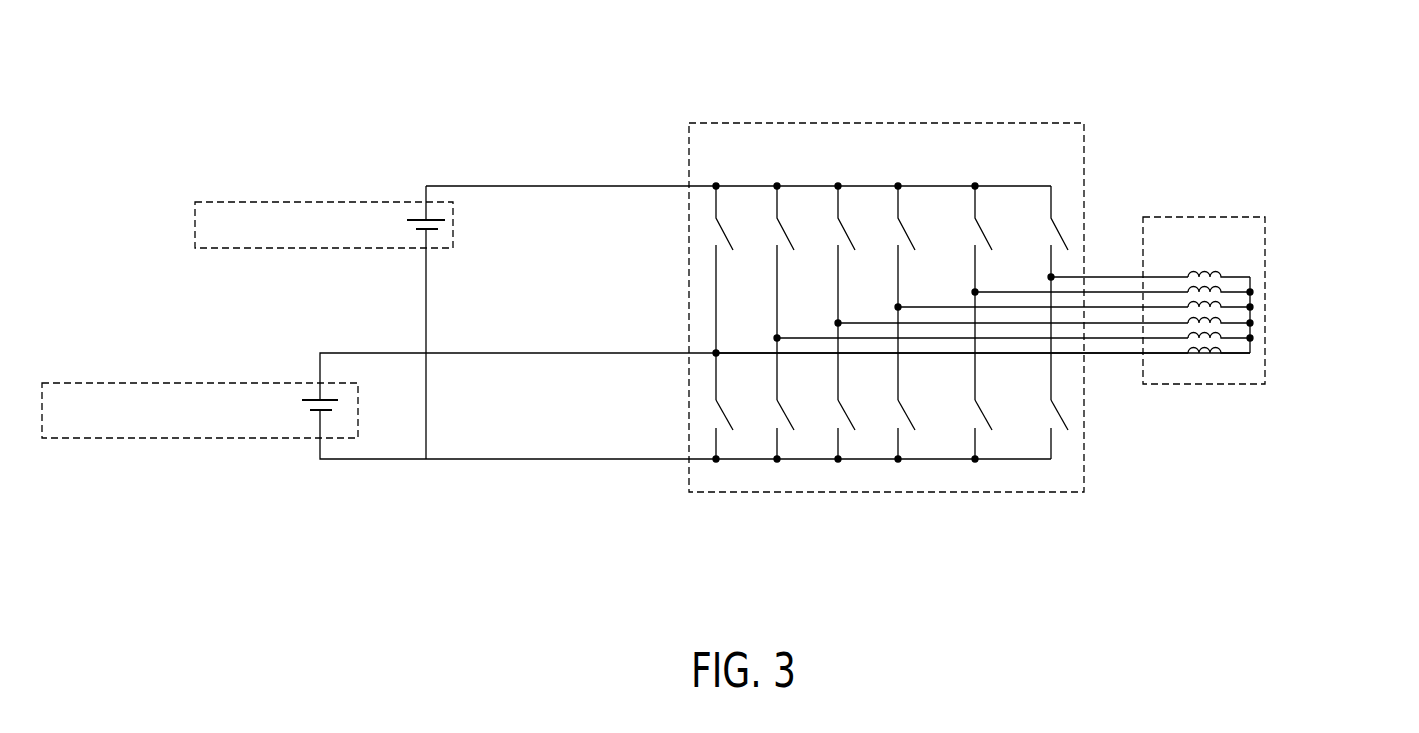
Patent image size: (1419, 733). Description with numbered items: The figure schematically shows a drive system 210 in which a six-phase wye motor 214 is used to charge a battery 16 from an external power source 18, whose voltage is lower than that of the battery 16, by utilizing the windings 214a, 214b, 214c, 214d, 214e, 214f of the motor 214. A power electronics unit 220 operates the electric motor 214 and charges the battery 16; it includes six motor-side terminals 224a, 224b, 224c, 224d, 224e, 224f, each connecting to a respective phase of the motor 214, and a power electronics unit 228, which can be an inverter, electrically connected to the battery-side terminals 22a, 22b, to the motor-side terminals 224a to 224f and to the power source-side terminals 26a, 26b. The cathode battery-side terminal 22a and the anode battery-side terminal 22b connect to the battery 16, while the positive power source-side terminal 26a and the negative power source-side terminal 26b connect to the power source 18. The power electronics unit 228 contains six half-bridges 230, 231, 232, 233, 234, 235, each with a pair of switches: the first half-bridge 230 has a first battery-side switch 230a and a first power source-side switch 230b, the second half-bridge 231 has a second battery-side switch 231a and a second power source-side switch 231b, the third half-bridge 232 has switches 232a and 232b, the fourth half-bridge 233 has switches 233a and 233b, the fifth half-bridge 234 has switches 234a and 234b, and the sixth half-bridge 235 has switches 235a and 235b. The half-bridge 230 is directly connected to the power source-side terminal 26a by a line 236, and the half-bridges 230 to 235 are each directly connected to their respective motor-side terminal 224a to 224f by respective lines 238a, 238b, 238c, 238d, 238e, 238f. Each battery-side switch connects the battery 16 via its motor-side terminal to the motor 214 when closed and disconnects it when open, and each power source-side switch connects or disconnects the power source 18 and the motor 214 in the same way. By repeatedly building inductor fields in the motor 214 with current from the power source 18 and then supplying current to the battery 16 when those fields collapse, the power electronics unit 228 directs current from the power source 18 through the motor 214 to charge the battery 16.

The battery 16 is at (311, 201).
The external power source 18 is at (205, 383).
The cathode battery-side terminal 22a is at (420, 167).
The anode battery-side terminal 22b is at (412, 265).
The positive power source-side terminal 26a is at (296, 362).
The negative power source-side terminal 26b is at (289, 465).
The drive system 210 is at (568, 99).
The wye motor 214 is at (1265, 217).
The winding 214a is at (1210, 356).
The winding 214b is at (1217, 336).
The winding 214c is at (1220, 320).
The winding 214d is at (1224, 306).
The winding 214e is at (1228, 291).
The winding 214f is at (1222, 276).
The power electronics unit 220 is at (970, 123).
The motor-side terminal 224a is at (1183, 364).
The motor-side terminal 224b is at (1158, 347).
The motor-side terminal 224c is at (1145, 331).
The motor-side terminal 224d is at (1167, 300).
The motor-side terminal 224e is at (1150, 285).
The motor-side terminal 224f is at (1134, 269).
The power electronics unit 228 is at (1010, 492).
The first half-bridge 230 is at (685, 368).
The first battery-side switch 230a is at (727, 236).
The first power source-side switch 230b is at (721, 413).
The second half-bridge 231 is at (693, 351).
The second battery-side switch 231a is at (733, 247).
The second power source-side switch 231b is at (690, 354).
The third half-bridge 232 is at (745, 352).
The third battery-side switch 232a is at (794, 247).
The third power source-side switch 232b is at (838, 432).
The fourth half-bridge 233 is at (784, 331).
The fourth battery-side switch 233a is at (855, 247).
The fourth power source-side switch 233b is at (898, 432).
The fifth half-bridge 234 is at (982, 334).
The fifth battery-side switch 234a is at (992, 246).
The fifth power source-side switch 234b is at (975, 432).
The sixth half-bridge 235 is at (1023, 316).
The sixth battery-side switch 235a is at (1068, 246).
The sixth power source-side switch 235b is at (1065, 420).
The line 236 is at (541, 353).
The line 238a is at (755, 353).
The line 238b is at (820, 338).
The line 238c is at (875, 323).
The line 238d is at (928, 307).
The line 238e is at (1012, 292).
The line 238f is at (1088, 277).